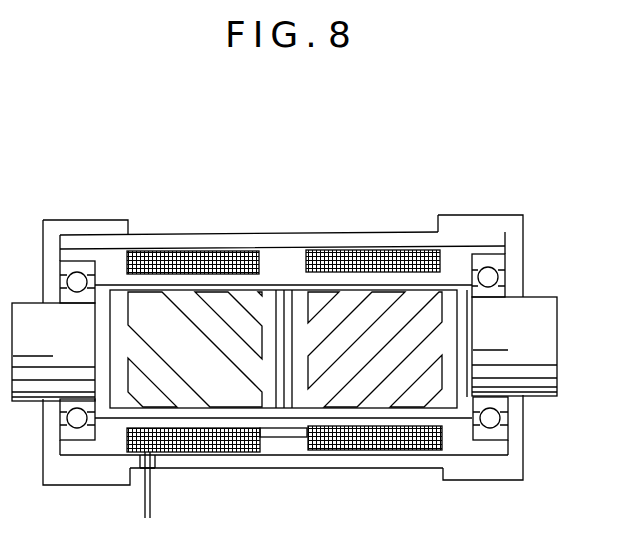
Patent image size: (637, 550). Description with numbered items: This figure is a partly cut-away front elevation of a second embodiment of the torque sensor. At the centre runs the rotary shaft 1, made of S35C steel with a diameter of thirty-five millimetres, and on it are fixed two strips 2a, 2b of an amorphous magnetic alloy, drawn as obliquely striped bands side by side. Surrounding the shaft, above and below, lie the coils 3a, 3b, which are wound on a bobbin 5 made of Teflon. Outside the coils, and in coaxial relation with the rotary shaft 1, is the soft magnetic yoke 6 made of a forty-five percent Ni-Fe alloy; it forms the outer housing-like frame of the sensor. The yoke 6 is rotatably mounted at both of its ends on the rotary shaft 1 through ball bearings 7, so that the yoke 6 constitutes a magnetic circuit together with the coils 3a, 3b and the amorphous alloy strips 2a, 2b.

The rotary shaft 1 is at (545, 343).
The strip of amorphous magnetic alloy 2a is at (192, 402).
The strip of amorphous magnetic alloy 2b is at (381, 398).
The coil 3a is at (190, 262).
The coil 3b is at (375, 260).
The bobbin 5 is at (276, 440).
The soft magnetic yoke 6 is at (278, 241).
The ball bearing 7 is at (65, 283).